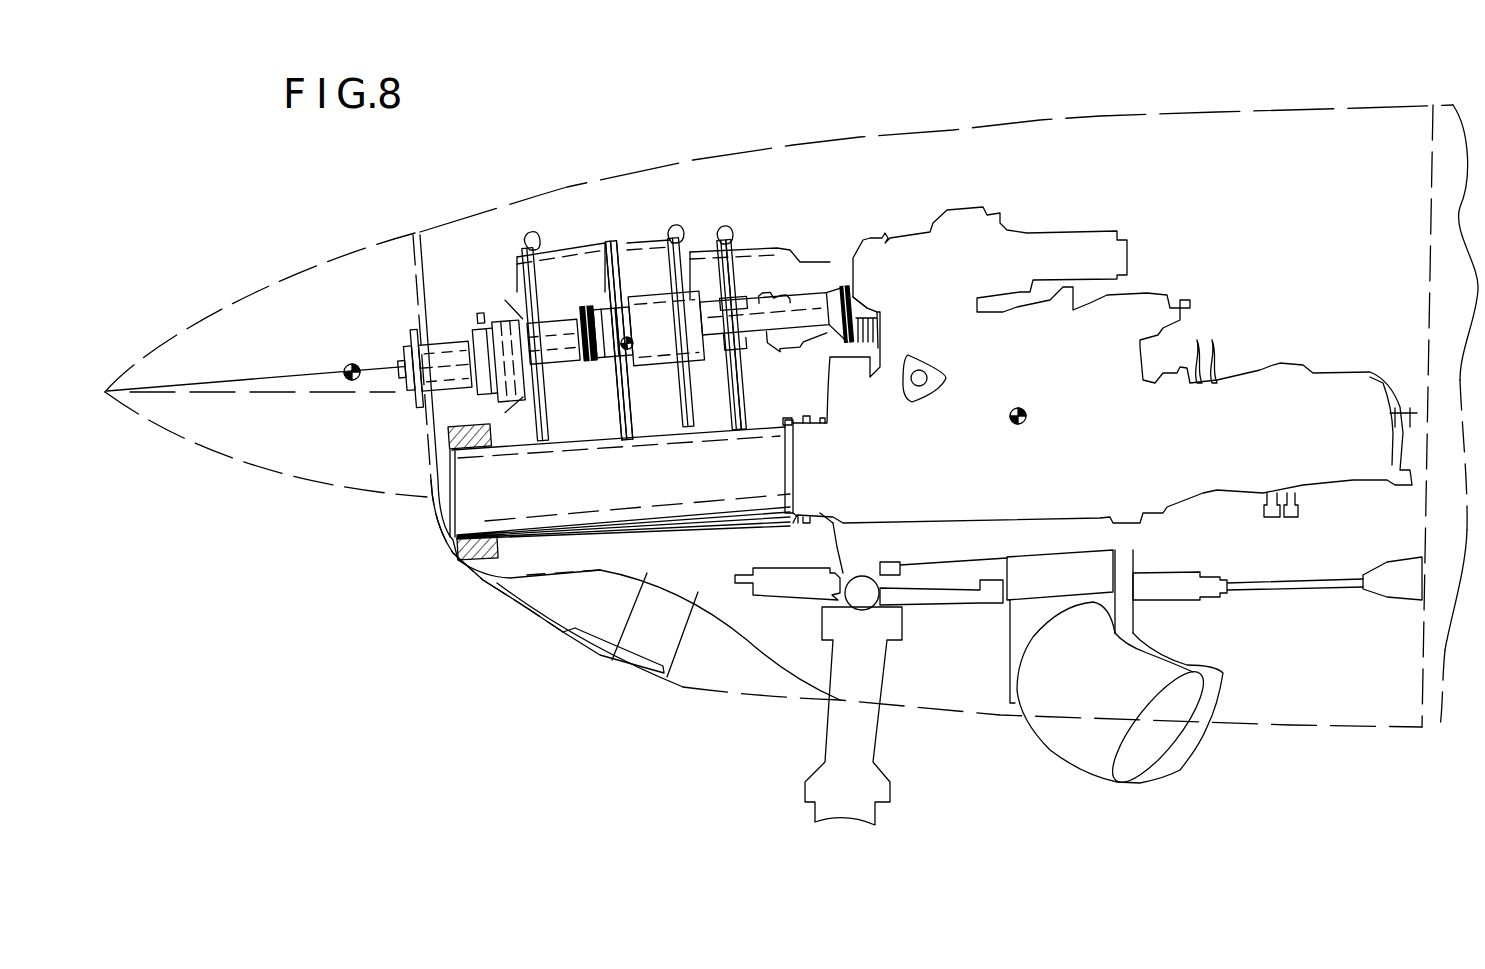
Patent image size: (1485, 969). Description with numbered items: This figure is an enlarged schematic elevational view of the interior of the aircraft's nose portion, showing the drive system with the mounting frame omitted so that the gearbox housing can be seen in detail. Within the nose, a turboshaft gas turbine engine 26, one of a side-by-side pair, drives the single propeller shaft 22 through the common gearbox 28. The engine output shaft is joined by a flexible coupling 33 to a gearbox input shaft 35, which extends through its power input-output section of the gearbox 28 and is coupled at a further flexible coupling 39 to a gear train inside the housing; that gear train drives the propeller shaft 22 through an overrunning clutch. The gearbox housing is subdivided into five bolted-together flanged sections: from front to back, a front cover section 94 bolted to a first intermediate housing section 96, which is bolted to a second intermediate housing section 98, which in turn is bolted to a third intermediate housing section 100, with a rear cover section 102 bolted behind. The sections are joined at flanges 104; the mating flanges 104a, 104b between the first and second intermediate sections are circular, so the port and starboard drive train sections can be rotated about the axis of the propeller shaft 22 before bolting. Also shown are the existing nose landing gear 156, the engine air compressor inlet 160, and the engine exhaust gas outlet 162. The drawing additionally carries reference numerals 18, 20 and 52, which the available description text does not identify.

The nacelle 18 is at (806, 142).
The nose cone 20 is at (359, 247).
The propeller shaft 22 is at (441, 343).
The turboshaft gas turbine engine 26 is at (998, 362).
The gearbox 28 is at (670, 210).
The flexible coupling 33 is at (842, 287).
The gearbox input shaft 35 is at (778, 300).
The flexible coupling 39 is at (597, 362).
The bulkhead 52 is at (1430, 283).
The front cover section 94 is at (536, 437).
The first intermediate housing section 96 is at (601, 430).
The second intermediate housing section 98 is at (663, 420).
The third intermediate housing section 100 is at (720, 420).
The rear cover section 102 is at (740, 278).
The flanges 104 is at (742, 229).
The mating flange 104a is at (613, 245).
The mating flange 104b is at (628, 245).
The nose landing gear 156 is at (825, 727).
The engine air compressor inlet 160 is at (445, 522).
The engine exhaust gas outlet 162 is at (1148, 790).